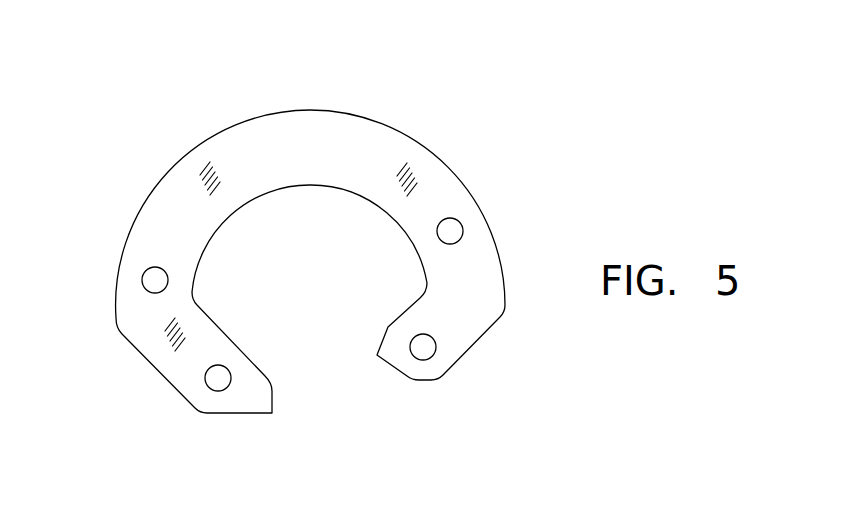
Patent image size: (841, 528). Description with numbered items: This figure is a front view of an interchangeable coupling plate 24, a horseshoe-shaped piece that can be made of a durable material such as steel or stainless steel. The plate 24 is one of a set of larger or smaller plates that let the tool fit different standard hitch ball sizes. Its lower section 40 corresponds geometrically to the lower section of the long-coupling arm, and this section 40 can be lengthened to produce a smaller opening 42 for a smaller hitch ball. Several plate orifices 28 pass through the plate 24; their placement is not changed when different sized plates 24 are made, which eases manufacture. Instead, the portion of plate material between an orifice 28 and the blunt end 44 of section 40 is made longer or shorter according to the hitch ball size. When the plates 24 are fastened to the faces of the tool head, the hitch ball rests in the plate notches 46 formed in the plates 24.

The coupling plate 24 is at (467, 95).
The plate orifice 28 is at (153, 281).
The section 40 is at (105, 327).
The opening 42 is at (390, 373).
The blunt end 44 is at (278, 400).
The plate notch 46 is at (272, 368).